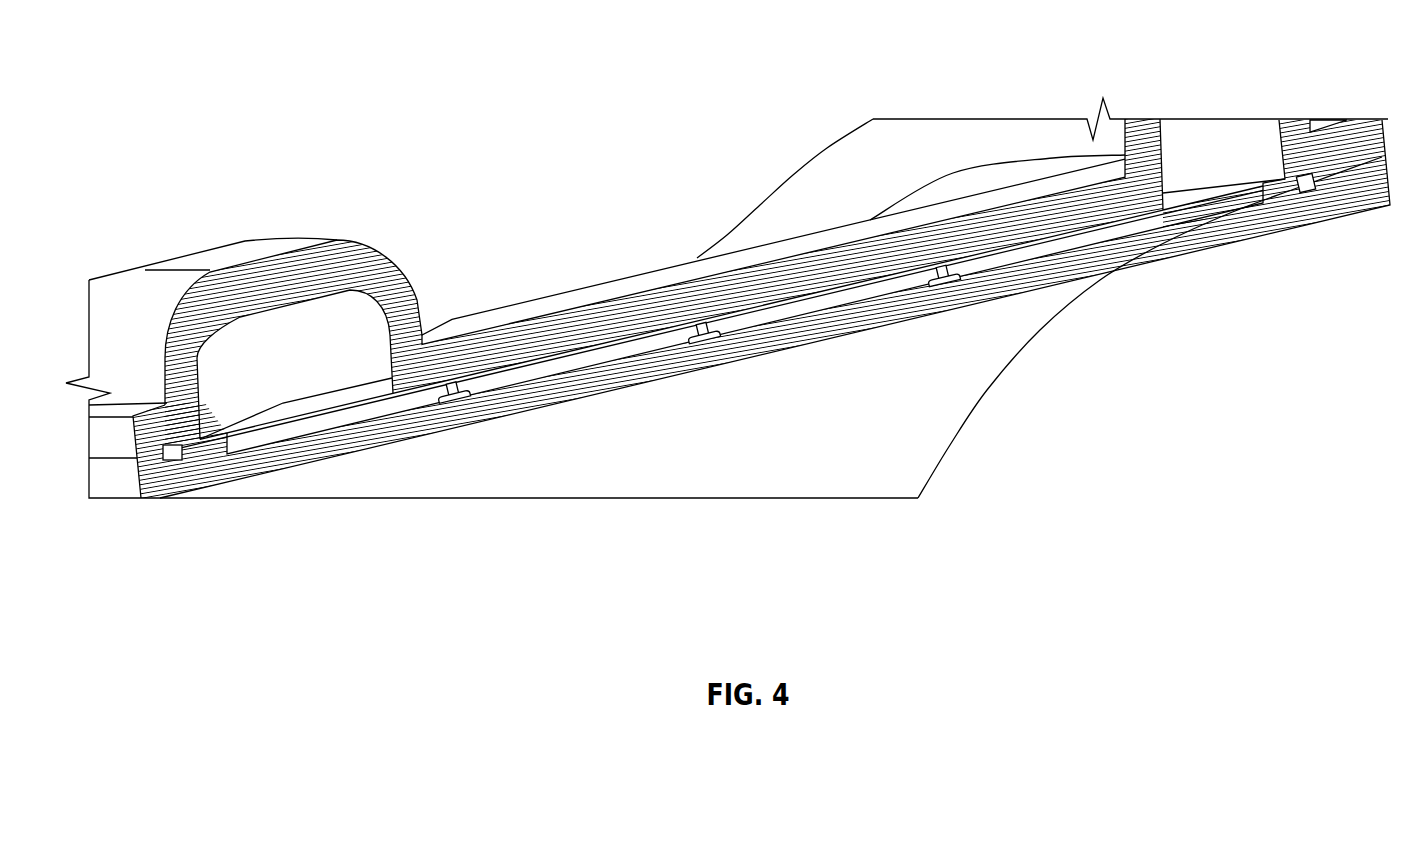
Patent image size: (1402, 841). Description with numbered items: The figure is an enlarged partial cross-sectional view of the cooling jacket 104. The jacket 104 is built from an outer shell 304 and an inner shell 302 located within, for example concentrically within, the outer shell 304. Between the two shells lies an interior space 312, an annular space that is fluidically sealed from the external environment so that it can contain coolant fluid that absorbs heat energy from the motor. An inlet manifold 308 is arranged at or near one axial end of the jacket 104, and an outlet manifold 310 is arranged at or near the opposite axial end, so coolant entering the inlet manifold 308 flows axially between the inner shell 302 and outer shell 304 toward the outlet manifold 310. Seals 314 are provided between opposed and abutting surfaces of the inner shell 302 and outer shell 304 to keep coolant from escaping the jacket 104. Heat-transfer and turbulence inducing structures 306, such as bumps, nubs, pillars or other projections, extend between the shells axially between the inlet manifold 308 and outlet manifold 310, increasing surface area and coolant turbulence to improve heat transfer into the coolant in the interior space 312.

The jacket 104 is at (1185, 397).
The inner shell 302 is at (1330, 202).
The outer shell 304 is at (547, 327).
The heat-transfer and turbulence inducing structures 306 is at (963, 273).
The inlet manifold 308 is at (1182, 173).
The outlet manifold 310 is at (240, 363).
The interior space 312 is at (593, 353).
The seal 314 is at (1312, 184).